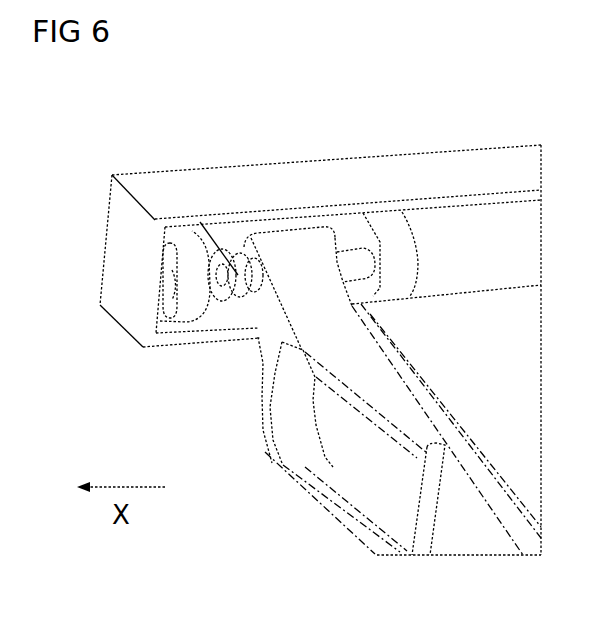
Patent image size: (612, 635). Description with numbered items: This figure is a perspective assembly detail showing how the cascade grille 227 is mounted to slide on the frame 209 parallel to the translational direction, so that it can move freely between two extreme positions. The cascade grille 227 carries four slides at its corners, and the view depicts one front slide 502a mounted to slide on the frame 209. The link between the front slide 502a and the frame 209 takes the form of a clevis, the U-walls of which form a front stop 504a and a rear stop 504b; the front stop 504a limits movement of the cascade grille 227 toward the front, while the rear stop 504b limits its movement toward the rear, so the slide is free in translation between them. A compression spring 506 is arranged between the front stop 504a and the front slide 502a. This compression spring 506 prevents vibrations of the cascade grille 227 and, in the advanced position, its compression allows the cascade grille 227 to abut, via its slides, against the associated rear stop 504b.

The frame 209 is at (497, 165).
The cascade grille 227 is at (512, 366).
The front slide 502a is at (305, 463).
The front stop 504a is at (182, 307).
The rear stop 504b is at (386, 242).
The compression spring 506 is at (207, 260).